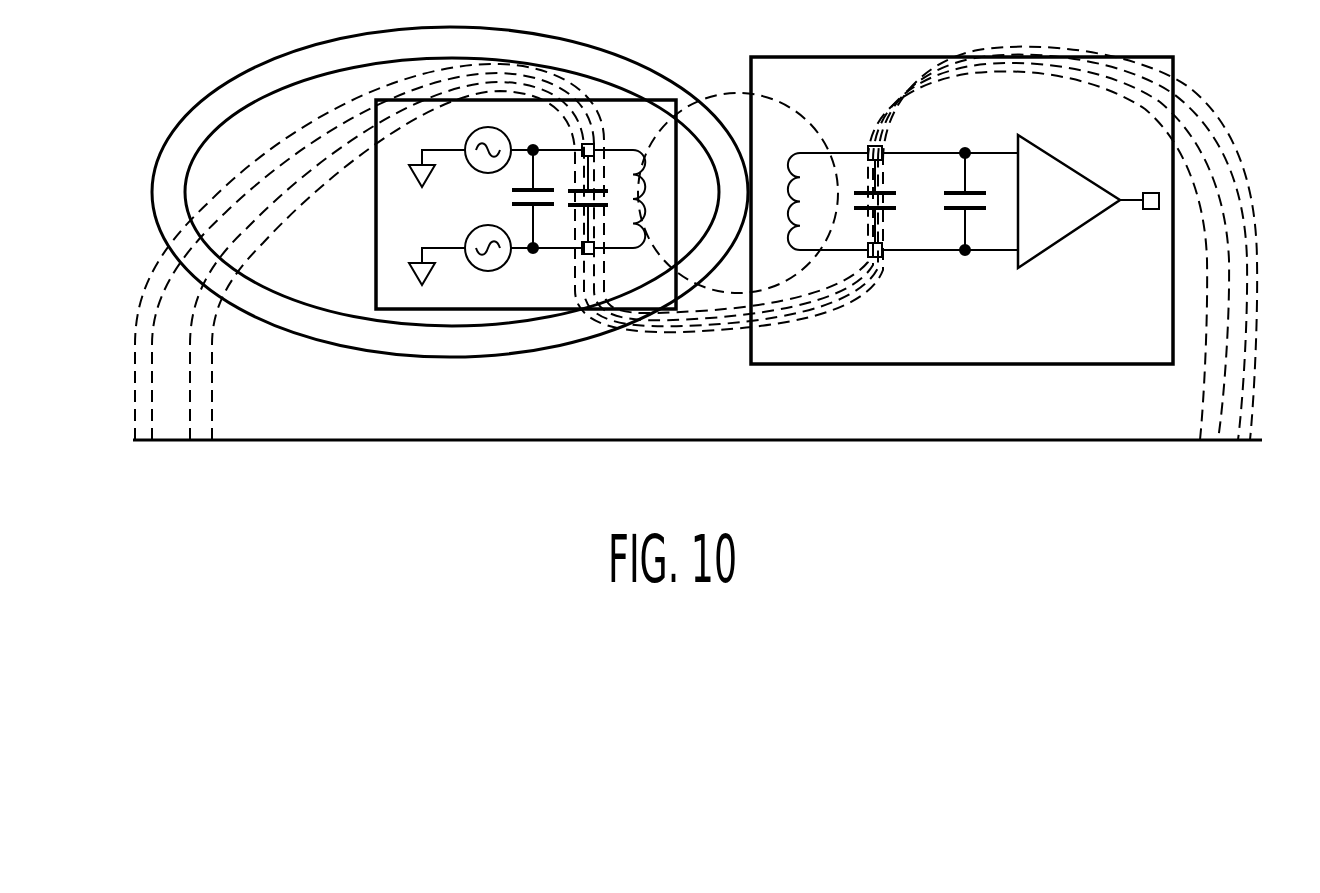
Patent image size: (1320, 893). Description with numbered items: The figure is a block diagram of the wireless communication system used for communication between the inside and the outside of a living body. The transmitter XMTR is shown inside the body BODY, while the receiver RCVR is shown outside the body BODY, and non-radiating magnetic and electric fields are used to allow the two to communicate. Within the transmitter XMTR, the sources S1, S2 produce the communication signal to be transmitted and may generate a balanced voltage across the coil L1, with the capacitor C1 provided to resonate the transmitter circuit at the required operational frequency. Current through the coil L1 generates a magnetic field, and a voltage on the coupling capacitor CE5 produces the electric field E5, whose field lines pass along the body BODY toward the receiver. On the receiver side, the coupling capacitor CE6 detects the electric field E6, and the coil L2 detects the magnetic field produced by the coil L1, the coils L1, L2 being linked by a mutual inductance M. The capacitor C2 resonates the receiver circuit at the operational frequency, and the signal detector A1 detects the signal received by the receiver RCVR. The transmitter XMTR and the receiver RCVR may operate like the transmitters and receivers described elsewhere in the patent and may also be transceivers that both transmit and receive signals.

The electric field E5 is at (509, 252).
The electric field E6 is at (1047, 243).
The transmitter XMTR is at (526, 204).
The receiver RCVR is at (962, 210).
The body BODY is at (450, 192).
The source S1 is at (488, 170).
The source S2 is at (488, 266).
The capacitor C1 is at (533, 219).
The coupling capacitor CE5 is at (607, 215).
The coil L1 is at (650, 199).
The mutual inductance M is at (738, 193).
The coil L2 is at (779, 201).
The coupling capacitor CE6 is at (889, 222).
The capacitor C2 is at (965, 223).
The signal detector A1 is at (1088, 201).